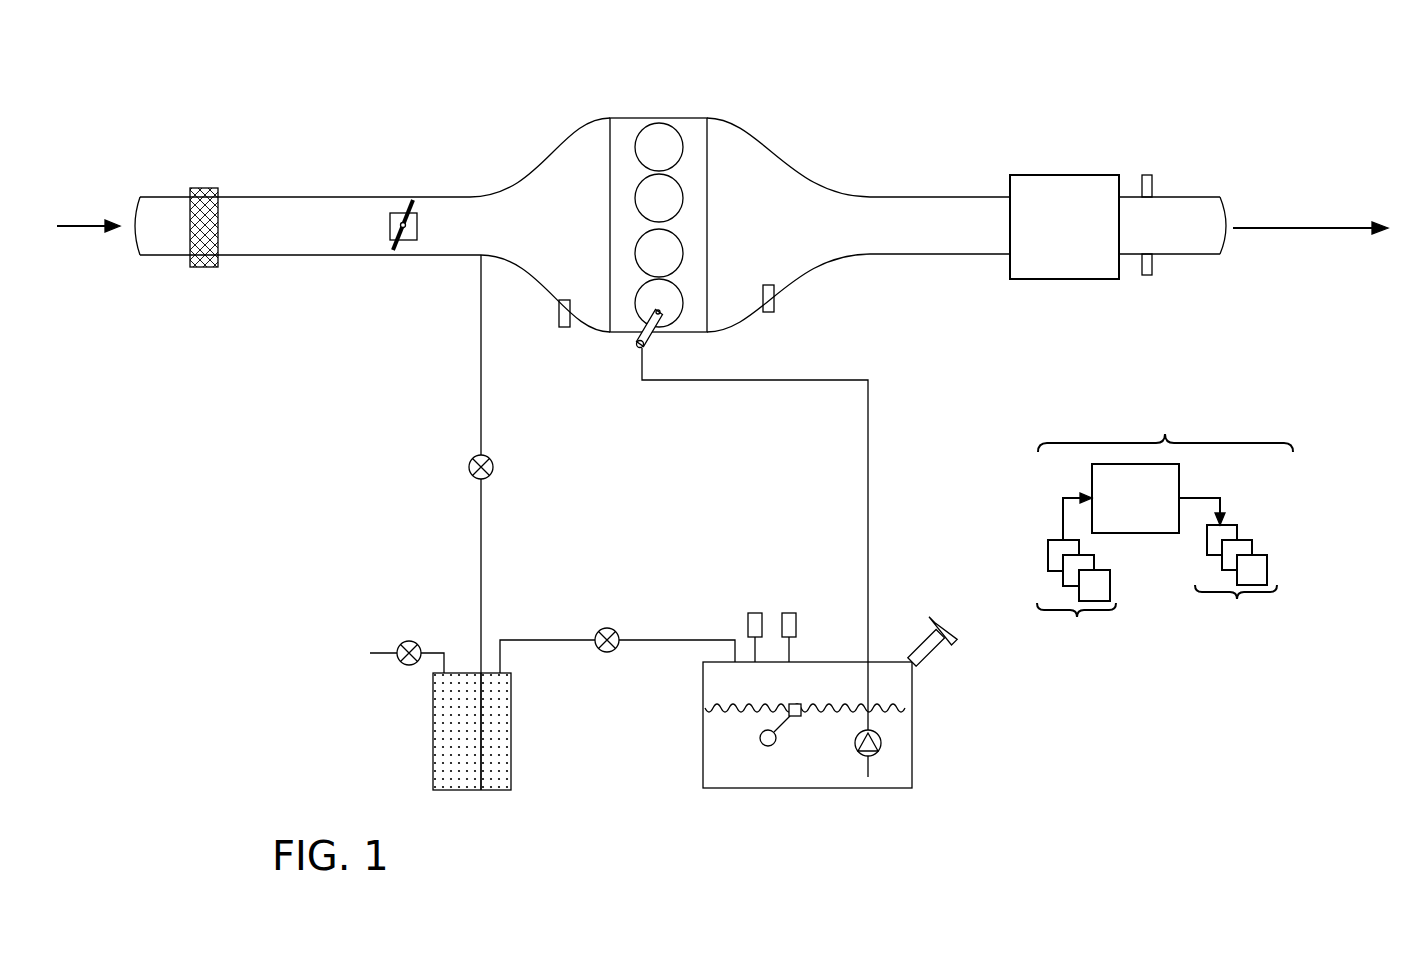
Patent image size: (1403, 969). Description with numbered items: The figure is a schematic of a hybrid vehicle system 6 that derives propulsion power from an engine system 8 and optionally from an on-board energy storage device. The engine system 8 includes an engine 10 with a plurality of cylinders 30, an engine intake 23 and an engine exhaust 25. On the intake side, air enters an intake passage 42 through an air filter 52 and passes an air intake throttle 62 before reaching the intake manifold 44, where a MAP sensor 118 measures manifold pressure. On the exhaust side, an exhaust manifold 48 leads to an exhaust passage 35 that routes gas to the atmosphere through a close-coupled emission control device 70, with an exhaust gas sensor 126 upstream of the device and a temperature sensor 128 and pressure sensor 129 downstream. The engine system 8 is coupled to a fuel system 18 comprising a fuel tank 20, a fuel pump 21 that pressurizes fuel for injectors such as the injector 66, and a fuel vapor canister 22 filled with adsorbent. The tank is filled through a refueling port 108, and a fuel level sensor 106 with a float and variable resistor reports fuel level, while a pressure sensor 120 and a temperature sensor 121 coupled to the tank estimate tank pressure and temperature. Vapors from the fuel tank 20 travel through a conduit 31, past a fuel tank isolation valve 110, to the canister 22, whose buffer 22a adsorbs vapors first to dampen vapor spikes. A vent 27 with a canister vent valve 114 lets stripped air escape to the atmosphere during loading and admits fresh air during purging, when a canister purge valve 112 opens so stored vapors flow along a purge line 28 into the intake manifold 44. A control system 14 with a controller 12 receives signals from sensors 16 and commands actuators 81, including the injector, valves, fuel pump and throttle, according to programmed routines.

The hybrid vehicle system 6 is at (153, 94).
The engine system 8 is at (1258, 88).
The engine 10 is at (675, 225).
The controller 12 is at (1135, 498).
The control system 14 is at (1165, 528).
The sensors 16 is at (1078, 579).
The fuel system 18 is at (962, 815).
The fuel tank 20 is at (703, 788).
The fuel pump 21 is at (880, 745).
The fuel vapor canister 22 is at (444, 790).
The buffer 22a is at (502, 790).
The engine intake 23 is at (533, 142).
The engine exhaust 25 is at (826, 150).
The vent 27 is at (372, 653).
The purge line 28 is at (481, 424).
The cylinders 30 is at (671, 140).
The conduit 31 is at (663, 640).
The exhaust passage 35 is at (1203, 197).
The intake passage 42 is at (168, 255).
The intake manifold 44 is at (573, 237).
The exhaust manifold 48 is at (788, 237).
The air filter 52 is at (206, 188).
The air intake throttle 62 is at (420, 220).
The fuel injector 66 is at (655, 346).
The emission control device 70 is at (1053, 175).
The actuators 81 is at (1228, 573).
The fuel level sensor 106 is at (800, 704).
The refueling port 108 is at (947, 626).
The fuel tank isolation valve 110 is at (600, 629).
The canister purge valve 112 is at (491, 459).
The canister vent valve 114 is at (412, 641).
The MAP sensor 118 is at (559, 314).
The pressure sensor 120 is at (796, 613).
The temperature sensor 121 is at (755, 613).
The exhaust gas sensor 126 is at (774, 292).
The temperature sensor 128 is at (1152, 275).
The pressure sensor 129 is at (1150, 175).